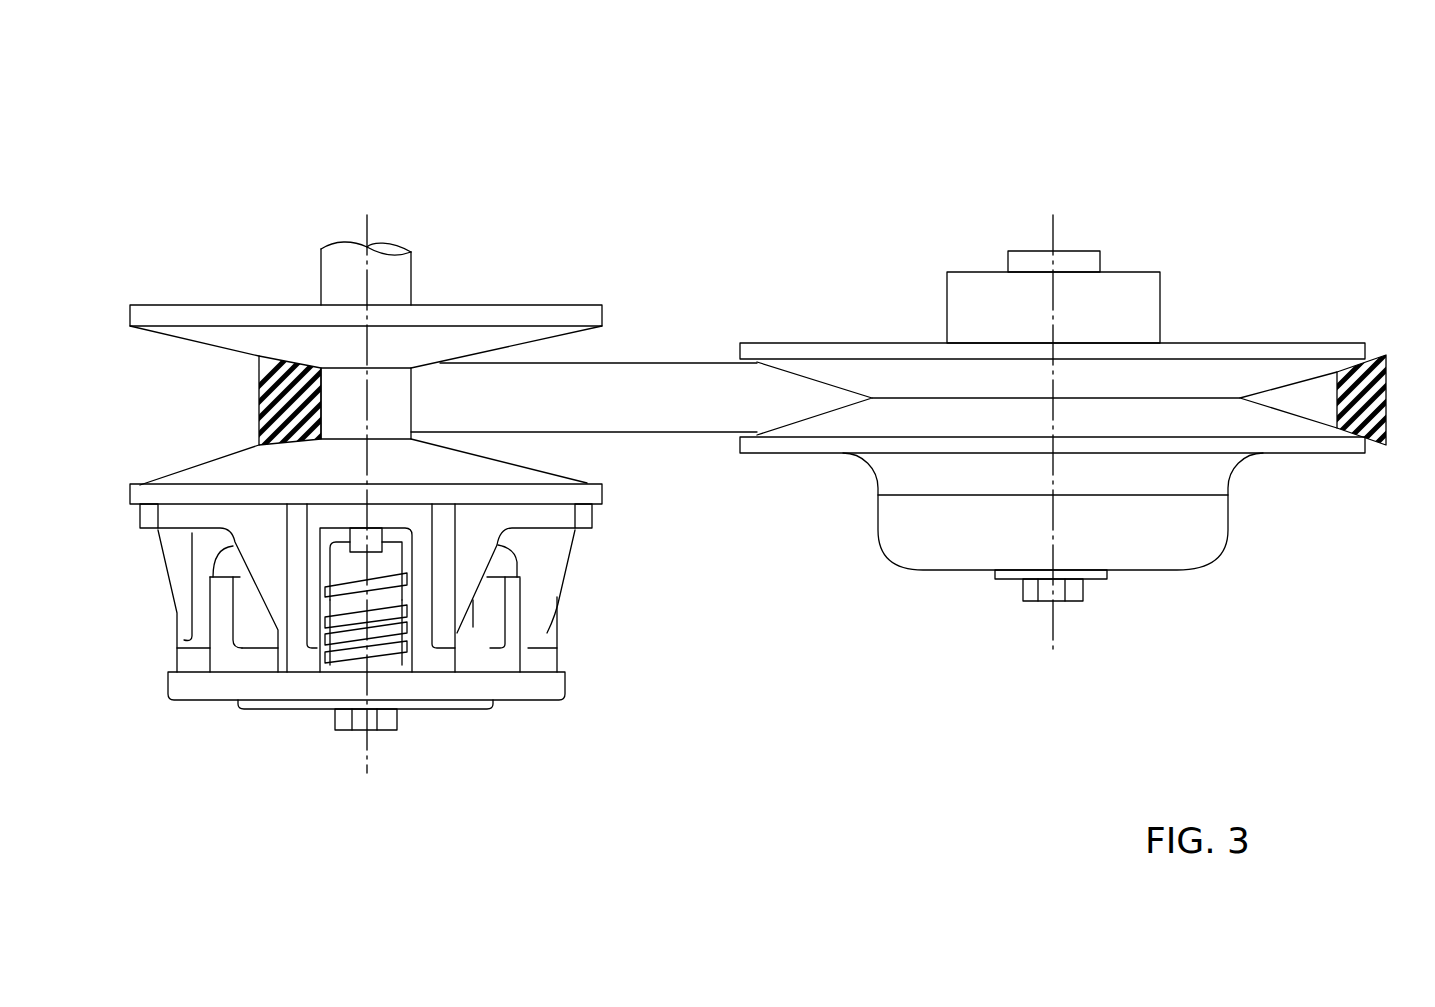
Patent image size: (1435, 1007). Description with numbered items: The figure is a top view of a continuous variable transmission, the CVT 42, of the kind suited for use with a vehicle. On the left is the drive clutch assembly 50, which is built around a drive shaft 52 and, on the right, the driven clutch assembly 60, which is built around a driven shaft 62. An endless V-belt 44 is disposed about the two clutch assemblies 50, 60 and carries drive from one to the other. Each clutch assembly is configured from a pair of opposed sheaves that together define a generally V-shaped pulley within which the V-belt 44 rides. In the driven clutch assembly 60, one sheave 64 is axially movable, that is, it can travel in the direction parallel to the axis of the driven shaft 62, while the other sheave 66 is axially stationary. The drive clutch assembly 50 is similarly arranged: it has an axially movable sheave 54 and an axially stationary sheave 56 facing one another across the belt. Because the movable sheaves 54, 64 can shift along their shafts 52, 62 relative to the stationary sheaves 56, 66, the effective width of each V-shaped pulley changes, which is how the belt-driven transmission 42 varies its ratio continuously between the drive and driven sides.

The continuous variable transmission 42 is at (690, 150).
The endless V-belt 44 is at (647, 435).
The drive clutch assembly 50 is at (143, 694).
The drive shaft 52 is at (411, 272).
The axially movable sheave 54 is at (168, 478).
The axially stationary sheave 56 is at (187, 305).
The driven clutch assembly 60 is at (1210, 596).
The driven shaft 62 is at (1100, 260).
The axially movable sheave 64 is at (1263, 343).
The axially stationary sheave 66 is at (810, 453).